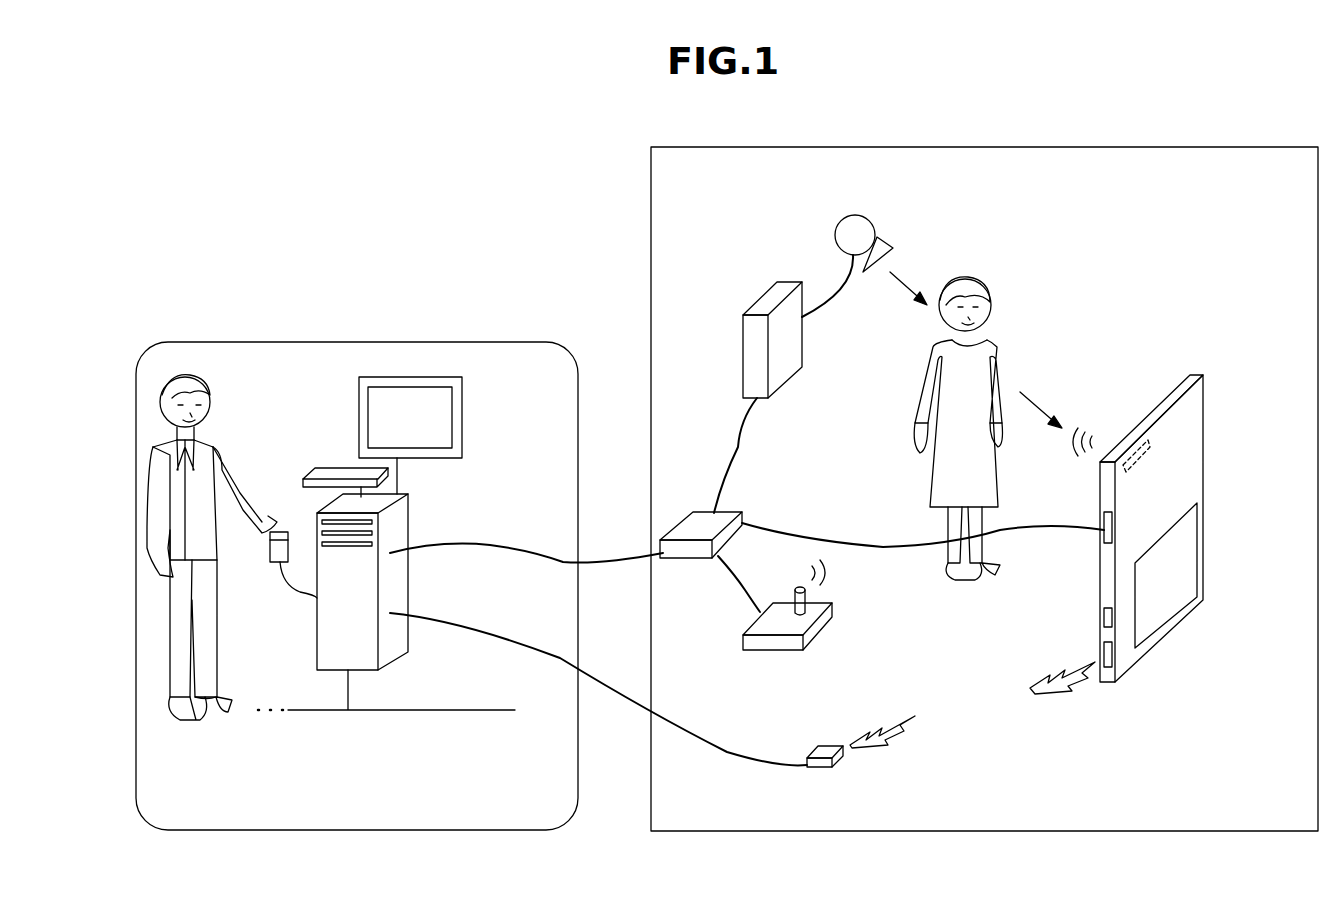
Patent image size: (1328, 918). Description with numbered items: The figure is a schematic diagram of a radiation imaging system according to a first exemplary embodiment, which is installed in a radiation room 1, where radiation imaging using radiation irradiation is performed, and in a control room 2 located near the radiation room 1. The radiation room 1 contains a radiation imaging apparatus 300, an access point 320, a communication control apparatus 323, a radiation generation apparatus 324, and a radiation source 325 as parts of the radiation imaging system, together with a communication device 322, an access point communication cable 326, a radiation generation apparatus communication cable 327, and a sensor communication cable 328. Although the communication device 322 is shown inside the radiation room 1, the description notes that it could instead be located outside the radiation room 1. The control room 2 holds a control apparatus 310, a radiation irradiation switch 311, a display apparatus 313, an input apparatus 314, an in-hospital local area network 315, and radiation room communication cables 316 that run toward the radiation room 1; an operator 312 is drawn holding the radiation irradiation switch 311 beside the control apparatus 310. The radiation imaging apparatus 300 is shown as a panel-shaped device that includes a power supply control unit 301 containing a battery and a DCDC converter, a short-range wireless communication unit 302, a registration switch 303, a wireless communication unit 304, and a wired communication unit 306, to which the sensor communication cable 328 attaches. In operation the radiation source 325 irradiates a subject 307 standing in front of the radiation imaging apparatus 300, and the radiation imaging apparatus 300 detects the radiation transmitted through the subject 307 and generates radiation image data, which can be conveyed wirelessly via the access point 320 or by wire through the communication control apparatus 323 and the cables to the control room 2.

The radiation room 1 is at (1112, 147).
The control room 2 is at (484, 342).
The radiation imaging apparatus 300 is at (1205, 420).
The power supply control unit 301 is at (1183, 560).
The short-range wireless communication unit 302 is at (1107, 672).
The registration switch 303 is at (1100, 617).
The wireless communication unit 304 is at (1135, 445).
The wired communication unit 306 is at (1098, 540).
The subject 307 is at (968, 278).
The control apparatus 310 is at (409, 514).
The radiation irradiation switch 311 is at (287, 530).
The operator 312 is at (210, 386).
The display apparatus 313 is at (463, 417).
The input apparatus 314 is at (332, 468).
The in-hospital local area network 315 is at (455, 710).
The radiation room communication cables 316 is at (613, 556).
The access point 320 is at (815, 645).
The communication device 322 is at (840, 768).
The communication control apparatus 323 is at (703, 510).
The radiation generation apparatus 324 is at (757, 300).
The radiation source 325 is at (857, 215).
The access point communication cable 326 is at (740, 588).
The radiation generation apparatus communication cable 327 is at (738, 445).
The sensor communication cable 328 is at (840, 542).